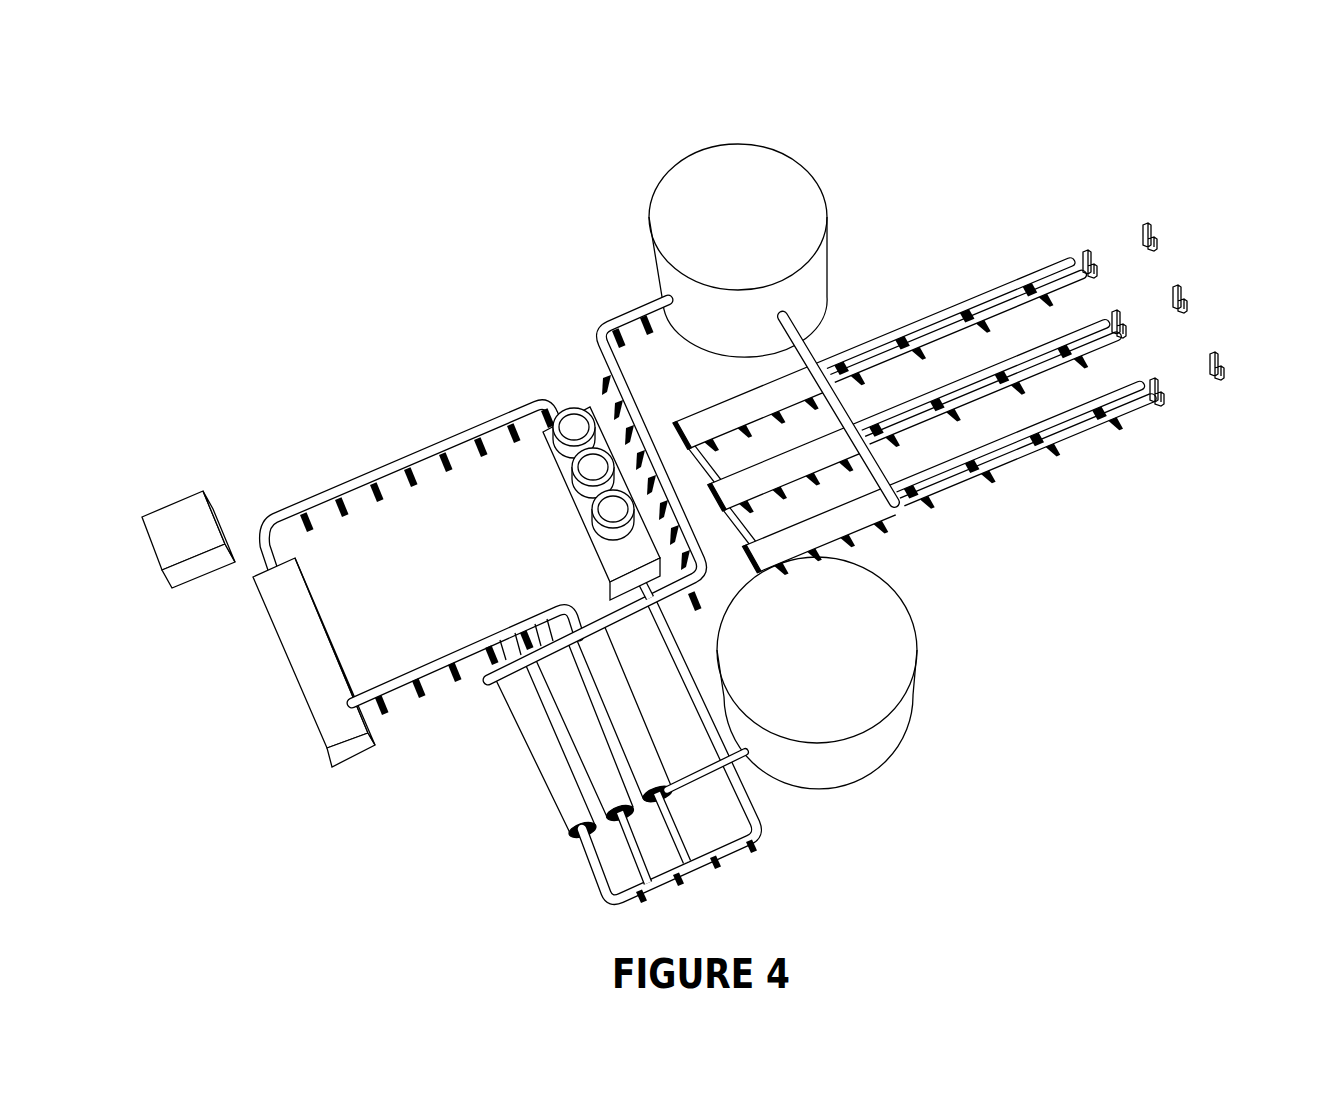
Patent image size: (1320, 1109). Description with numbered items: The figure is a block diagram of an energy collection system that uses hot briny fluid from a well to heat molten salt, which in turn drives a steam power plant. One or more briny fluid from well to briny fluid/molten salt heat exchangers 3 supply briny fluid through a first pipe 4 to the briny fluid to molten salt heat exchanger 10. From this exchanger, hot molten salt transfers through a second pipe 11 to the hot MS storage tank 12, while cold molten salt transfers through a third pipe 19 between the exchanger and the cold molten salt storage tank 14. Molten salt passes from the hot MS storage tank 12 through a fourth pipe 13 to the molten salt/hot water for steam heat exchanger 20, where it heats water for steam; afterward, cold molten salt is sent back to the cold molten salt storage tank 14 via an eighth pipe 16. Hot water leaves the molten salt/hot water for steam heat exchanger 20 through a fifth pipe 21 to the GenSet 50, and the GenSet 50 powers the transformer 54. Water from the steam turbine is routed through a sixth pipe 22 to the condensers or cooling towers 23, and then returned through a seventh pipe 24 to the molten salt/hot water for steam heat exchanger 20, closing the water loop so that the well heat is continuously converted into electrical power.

The briny fluid from well to briny fluid/molten salt heat exchangers 3 is at (1063, 255).
The first pipe 4 is at (1140, 412).
The briny fluid to molten salt heat exchanger 10 is at (727, 407).
The second pipe 11 is at (745, 552).
The hot MS storage tank 12 is at (915, 650).
The fourth pipe 13 is at (702, 780).
The cold molten salt storage tank 14 is at (800, 188).
The eighth pipe 16 is at (593, 338).
The third pipe 19 is at (808, 340).
The molten salt/hot water for steam heat exchanger 20 is at (582, 738).
The fifth pipe 21 is at (433, 657).
The sixth pipe 22 is at (353, 485).
The condensers or cooling towers 23 is at (578, 407).
The seventh pipe 24 is at (737, 857).
The GenSet 50 is at (283, 660).
The transformer 54 is at (186, 512).